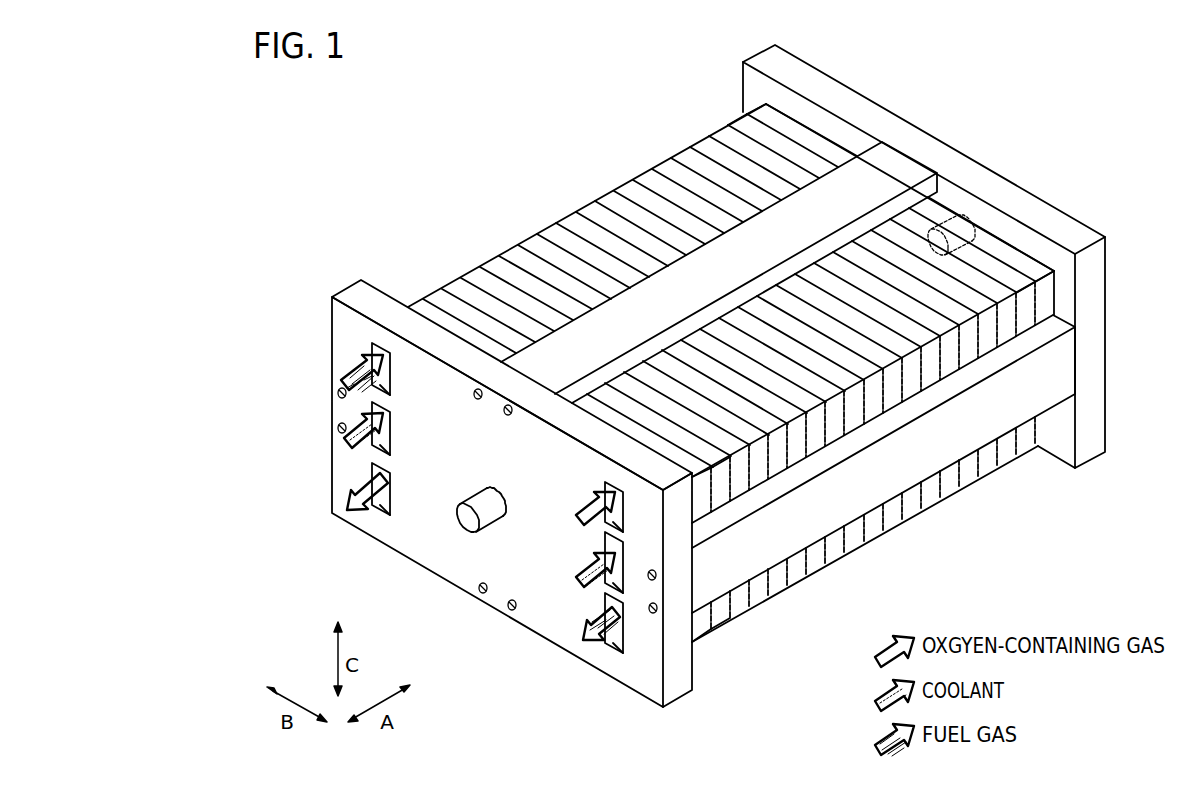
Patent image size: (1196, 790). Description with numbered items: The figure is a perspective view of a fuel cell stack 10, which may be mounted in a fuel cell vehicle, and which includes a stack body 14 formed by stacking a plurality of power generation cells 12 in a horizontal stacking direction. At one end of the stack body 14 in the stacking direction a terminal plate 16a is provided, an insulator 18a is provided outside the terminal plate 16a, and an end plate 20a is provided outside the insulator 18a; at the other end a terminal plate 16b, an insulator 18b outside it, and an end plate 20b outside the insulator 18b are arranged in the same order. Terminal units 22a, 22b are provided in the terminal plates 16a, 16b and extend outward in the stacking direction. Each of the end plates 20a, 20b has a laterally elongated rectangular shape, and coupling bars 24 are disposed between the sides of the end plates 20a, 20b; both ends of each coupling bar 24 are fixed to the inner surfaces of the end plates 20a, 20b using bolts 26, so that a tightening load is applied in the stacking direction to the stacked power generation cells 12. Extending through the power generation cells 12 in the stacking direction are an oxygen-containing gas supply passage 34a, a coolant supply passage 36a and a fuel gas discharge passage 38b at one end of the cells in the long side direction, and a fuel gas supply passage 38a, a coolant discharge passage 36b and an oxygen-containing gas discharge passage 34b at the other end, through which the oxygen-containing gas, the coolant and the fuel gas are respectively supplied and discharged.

The fuel cell stack 10 is at (400, 130).
The power generation cell 12 is at (546, 220).
The stack body 14 is at (578, 138).
The terminal plate 16a is at (718, 613).
The terminal plate 16b is at (817, 167).
The insulator 18a is at (700, 626).
The insulator 18b is at (785, 127).
The end plate 20a is at (361, 278).
The end plate 20b is at (1082, 244).
The terminal unit 22a is at (459, 512).
The terminal unit 22b is at (1000, 237).
The coupling bar 24 is at (905, 162).
The bolt 26 is at (480, 591).
The oxygen-containing gas supply passage 34a is at (600, 488).
The oxygen-containing gas discharge passage 34b is at (372, 479).
The coolant supply passage 36a is at (603, 585).
The coolant discharge passage 36b is at (372, 416).
The fuel gas supply passage 38a is at (372, 357).
The fuel gas discharge passage 38b is at (588, 650).